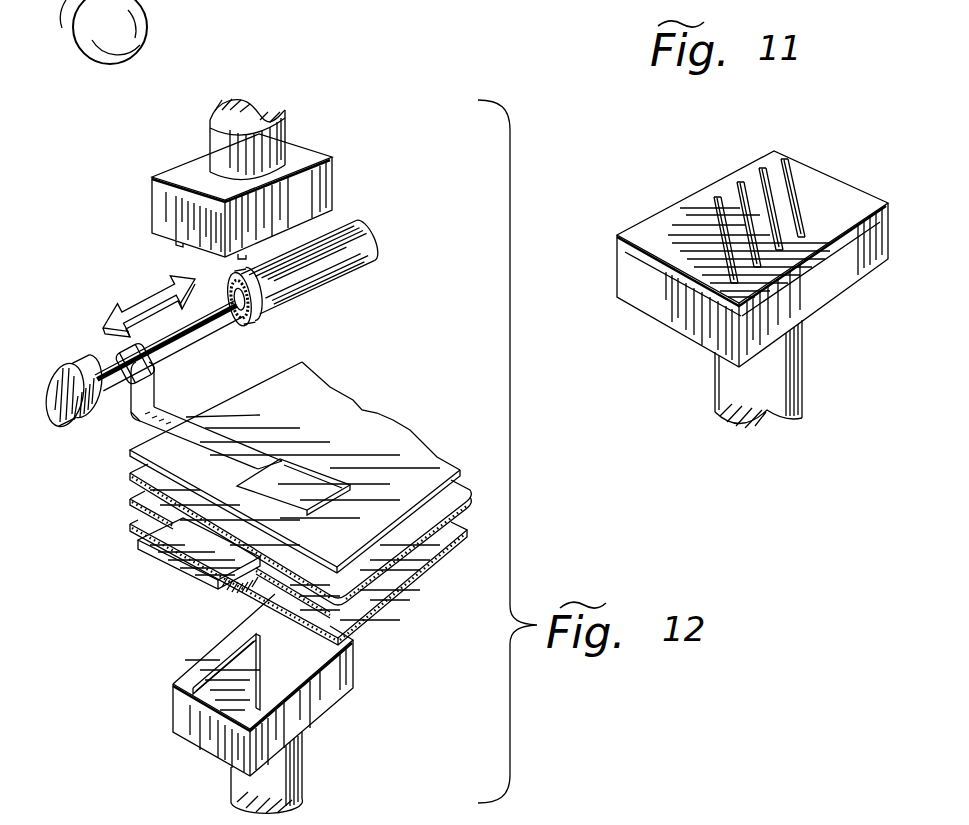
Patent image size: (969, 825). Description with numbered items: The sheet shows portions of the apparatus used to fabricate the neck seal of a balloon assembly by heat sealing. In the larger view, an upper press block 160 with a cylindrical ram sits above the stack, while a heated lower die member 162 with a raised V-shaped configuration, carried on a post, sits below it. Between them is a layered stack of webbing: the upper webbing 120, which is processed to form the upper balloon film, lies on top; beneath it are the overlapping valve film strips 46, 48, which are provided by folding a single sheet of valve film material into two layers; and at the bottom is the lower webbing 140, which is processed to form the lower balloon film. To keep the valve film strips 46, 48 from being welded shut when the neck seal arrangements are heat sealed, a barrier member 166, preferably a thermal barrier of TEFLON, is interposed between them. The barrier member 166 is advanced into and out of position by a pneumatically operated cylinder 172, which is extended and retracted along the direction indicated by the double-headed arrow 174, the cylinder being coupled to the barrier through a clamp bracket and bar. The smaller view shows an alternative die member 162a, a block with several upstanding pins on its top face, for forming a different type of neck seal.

In FIG. 12, the press block with cylindrical ram 160 is at (335, 180).
In FIG. 12, the pneumatically operated cylinder 172 is at (379, 237).
In FIG. 12, the arrow 174 is at (152, 302).
In FIG. 12, the upper webbing 120 is at (353, 408).
In FIG. 12, the valve film strip 46 is at (130, 470).
In FIG. 12, the valve film strip 48 is at (130, 493).
In FIG. 12, the lower webbing 140 is at (417, 571).
In FIG. 12, the barrier member 166 is at (174, 551).
In FIG. 12, the lower die block with post 162 is at (353, 667).
In FIG. 11, the die block with locating pins 162a is at (663, 317).